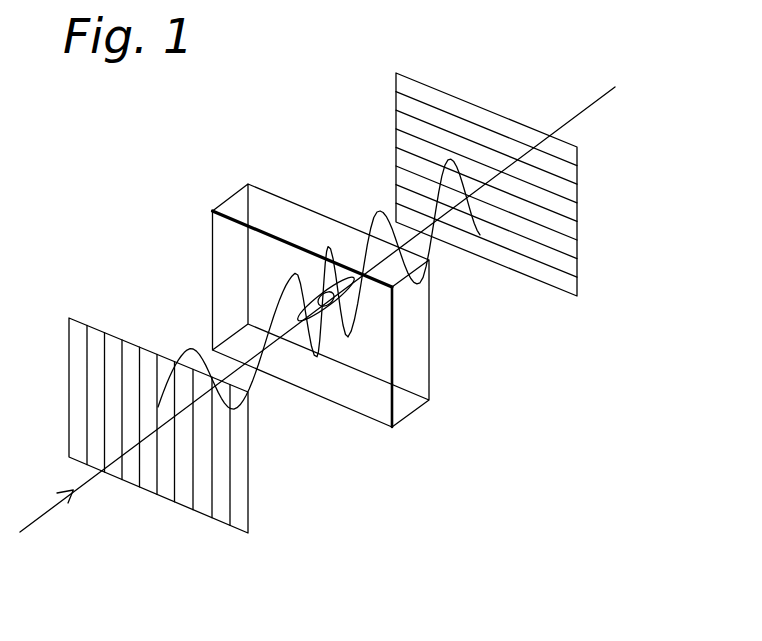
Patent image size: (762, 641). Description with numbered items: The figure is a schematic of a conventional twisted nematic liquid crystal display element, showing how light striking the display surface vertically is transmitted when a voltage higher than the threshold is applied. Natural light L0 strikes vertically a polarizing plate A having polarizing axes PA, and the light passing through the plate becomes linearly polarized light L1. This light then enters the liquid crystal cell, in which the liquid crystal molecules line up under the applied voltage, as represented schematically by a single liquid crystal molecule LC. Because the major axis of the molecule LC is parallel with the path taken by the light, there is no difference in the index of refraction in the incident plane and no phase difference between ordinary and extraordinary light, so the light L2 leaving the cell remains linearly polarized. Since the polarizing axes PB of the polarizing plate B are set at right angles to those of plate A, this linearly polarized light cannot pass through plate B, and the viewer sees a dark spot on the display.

The polarizing plate A is at (240, 518).
The polarizing axes PA is at (231, 467).
The polarizing plate B is at (567, 245).
The polarizing axes PB is at (543, 188).
The liquid crystal molecule LC is at (320, 295).
The natural light L0 is at (317, 317).
The linearly polarized light L1 is at (258, 378).
The light passing through the liquid crystal cell L2 is at (445, 240).